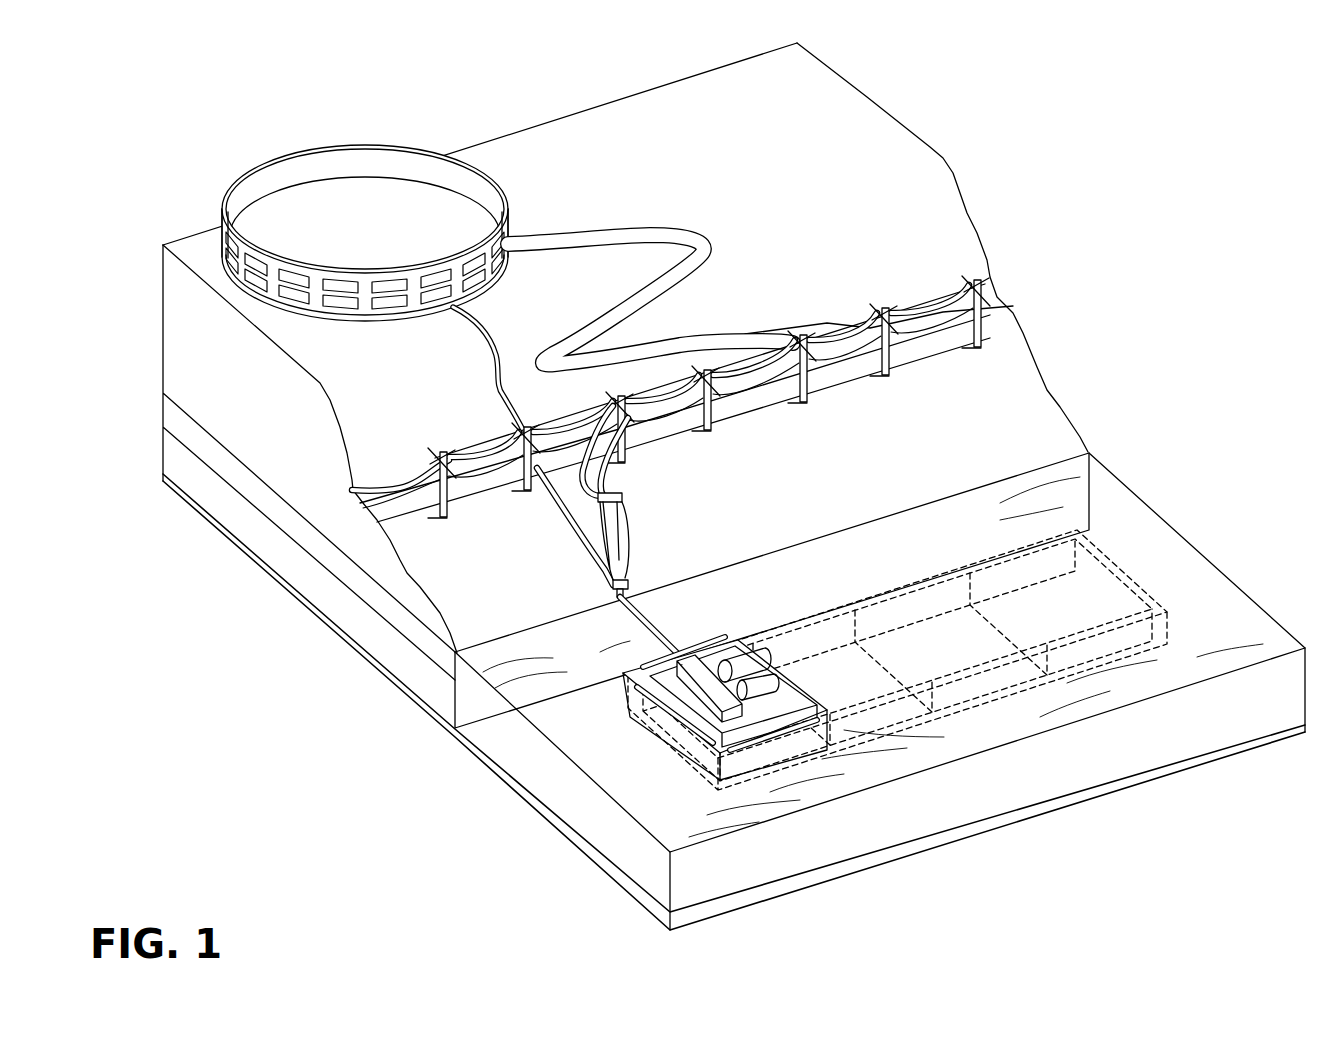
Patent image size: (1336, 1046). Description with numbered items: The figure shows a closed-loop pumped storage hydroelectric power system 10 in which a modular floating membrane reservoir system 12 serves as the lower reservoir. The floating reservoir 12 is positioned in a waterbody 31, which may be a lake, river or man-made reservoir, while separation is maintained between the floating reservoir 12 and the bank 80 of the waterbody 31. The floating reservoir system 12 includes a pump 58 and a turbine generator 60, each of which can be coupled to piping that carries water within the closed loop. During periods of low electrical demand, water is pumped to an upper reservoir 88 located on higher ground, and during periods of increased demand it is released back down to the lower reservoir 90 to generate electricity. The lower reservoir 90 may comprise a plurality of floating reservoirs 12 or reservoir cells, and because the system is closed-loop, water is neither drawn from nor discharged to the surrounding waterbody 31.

The closed-loop pumped storage hydroelectric power system 10 is at (789, 162).
The modular floating membrane reservoir system 12 is at (1093, 570).
The waterbody 31 is at (1222, 627).
The pump 58 is at (760, 687).
The turbine generator 60 is at (737, 664).
The bank 80 is at (482, 630).
The upper reservoir 88 is at (230, 190).
The lower reservoir 90 is at (1168, 563).